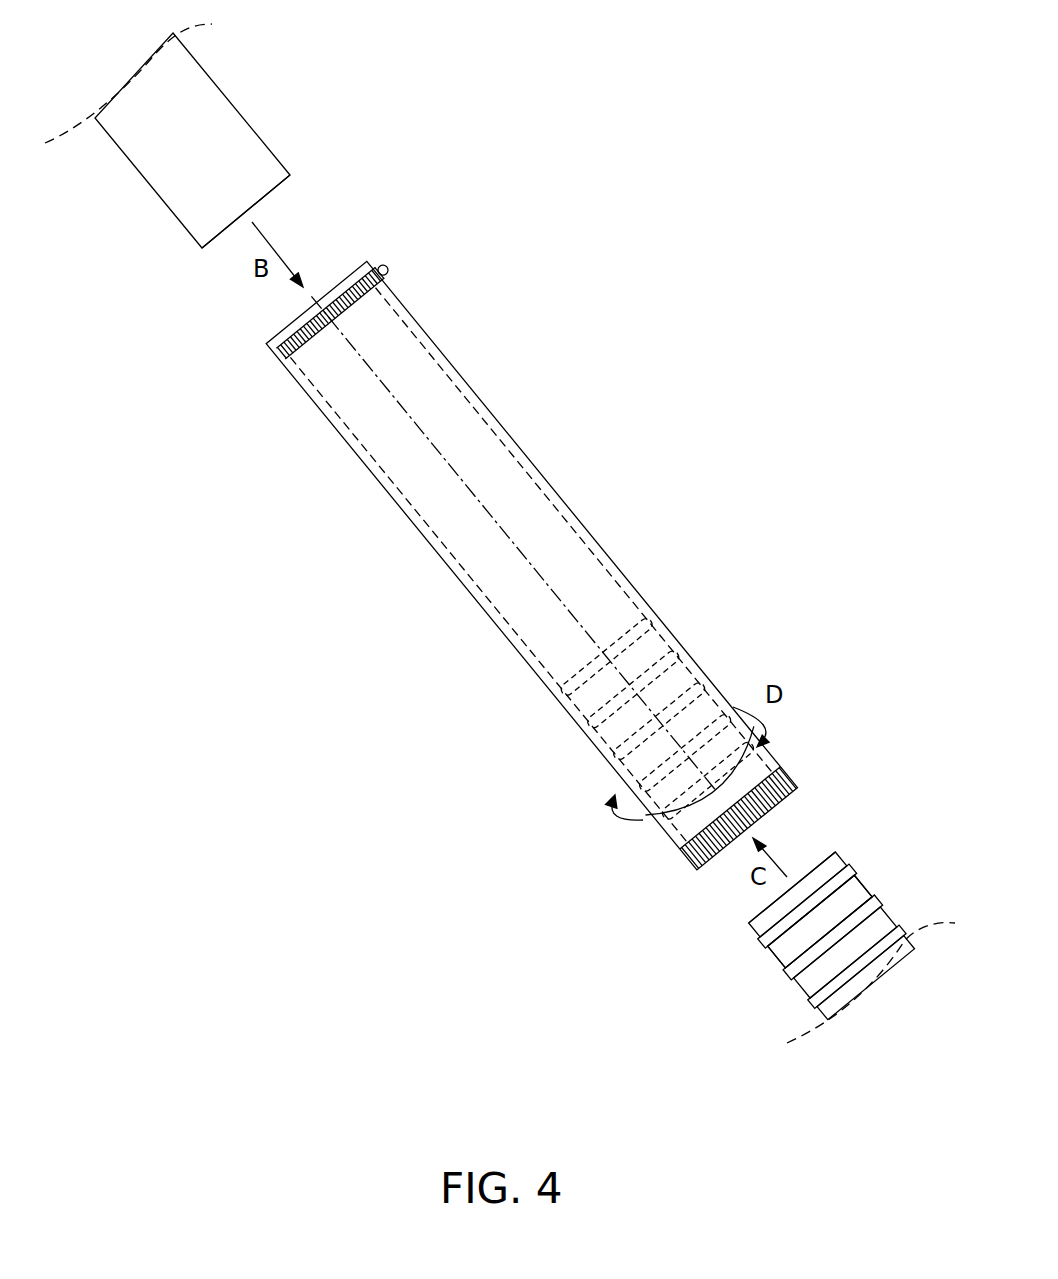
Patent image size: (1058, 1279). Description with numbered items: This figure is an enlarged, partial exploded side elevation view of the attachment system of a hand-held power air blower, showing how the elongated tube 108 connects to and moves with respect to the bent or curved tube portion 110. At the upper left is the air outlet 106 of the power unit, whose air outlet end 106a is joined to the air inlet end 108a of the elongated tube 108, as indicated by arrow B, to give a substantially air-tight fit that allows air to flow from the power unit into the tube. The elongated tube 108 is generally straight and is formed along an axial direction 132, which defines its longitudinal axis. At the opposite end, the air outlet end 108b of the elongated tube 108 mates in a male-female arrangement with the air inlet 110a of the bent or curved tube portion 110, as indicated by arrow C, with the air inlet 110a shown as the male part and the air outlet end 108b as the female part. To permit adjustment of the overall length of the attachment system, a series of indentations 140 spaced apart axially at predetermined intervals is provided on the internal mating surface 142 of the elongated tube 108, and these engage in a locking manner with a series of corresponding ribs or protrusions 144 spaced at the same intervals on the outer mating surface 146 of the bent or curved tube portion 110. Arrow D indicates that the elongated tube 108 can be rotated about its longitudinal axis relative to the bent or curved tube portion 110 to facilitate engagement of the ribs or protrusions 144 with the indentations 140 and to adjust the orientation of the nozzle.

The air outlet 106 is at (229, 98).
The air outlet end 106a is at (279, 187).
The elongated tube 108 is at (418, 353).
The air inlet end 108a is at (350, 272).
The air outlet end 108b is at (703, 872).
The bent or curved tube portion 110 is at (860, 888).
The air inlet 110a is at (833, 853).
The axial direction 132 is at (472, 497).
The indentations 140 is at (565, 692).
The internal mating surface 142 is at (500, 612).
The ribs or protrusions 144 is at (760, 938).
The outer mating surface 146 is at (783, 973).